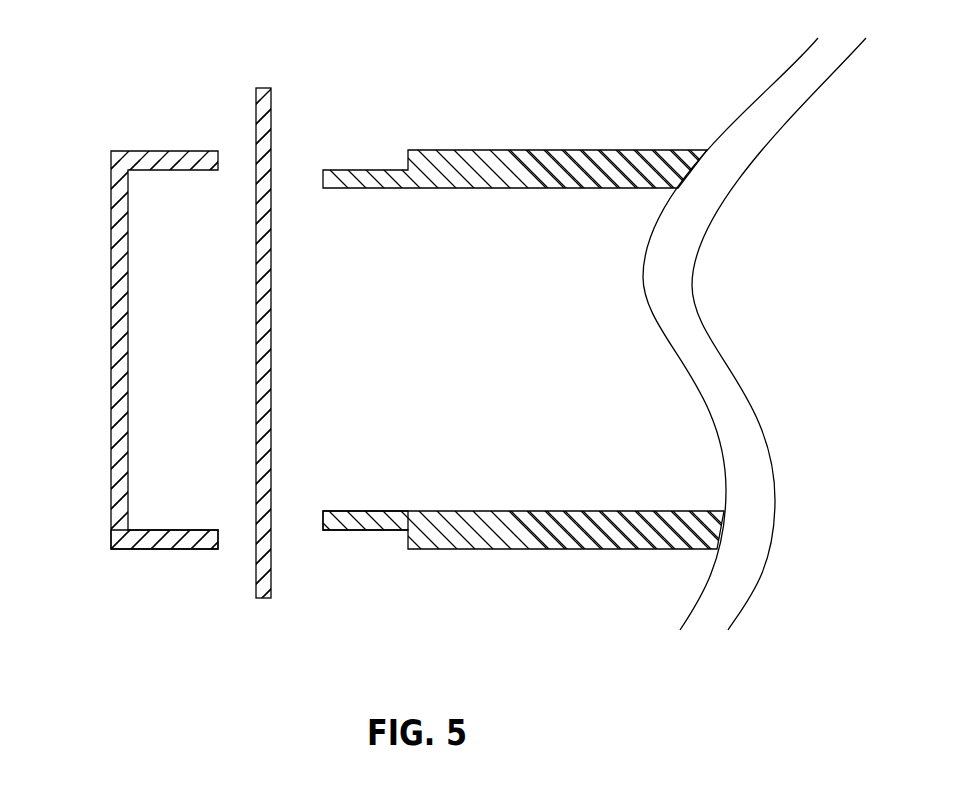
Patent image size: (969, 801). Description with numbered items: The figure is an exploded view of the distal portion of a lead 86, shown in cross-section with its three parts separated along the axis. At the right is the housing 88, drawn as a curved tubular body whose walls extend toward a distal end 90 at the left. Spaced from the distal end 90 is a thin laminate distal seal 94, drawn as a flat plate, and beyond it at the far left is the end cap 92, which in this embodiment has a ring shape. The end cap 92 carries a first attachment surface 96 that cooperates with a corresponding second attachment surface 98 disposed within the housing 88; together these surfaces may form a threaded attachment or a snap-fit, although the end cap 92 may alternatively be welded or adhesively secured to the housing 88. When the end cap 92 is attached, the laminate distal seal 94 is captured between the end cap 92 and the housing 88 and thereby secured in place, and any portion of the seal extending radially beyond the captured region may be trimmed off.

The lead 86 is at (562, 105).
The housing 88 is at (485, 532).
The distal end 90 is at (323, 174).
The end cap 92 is at (110, 380).
The laminate distal seal 94 is at (271, 105).
The first attachment surface 96 is at (203, 530).
The second attachment surface 98 is at (343, 531).